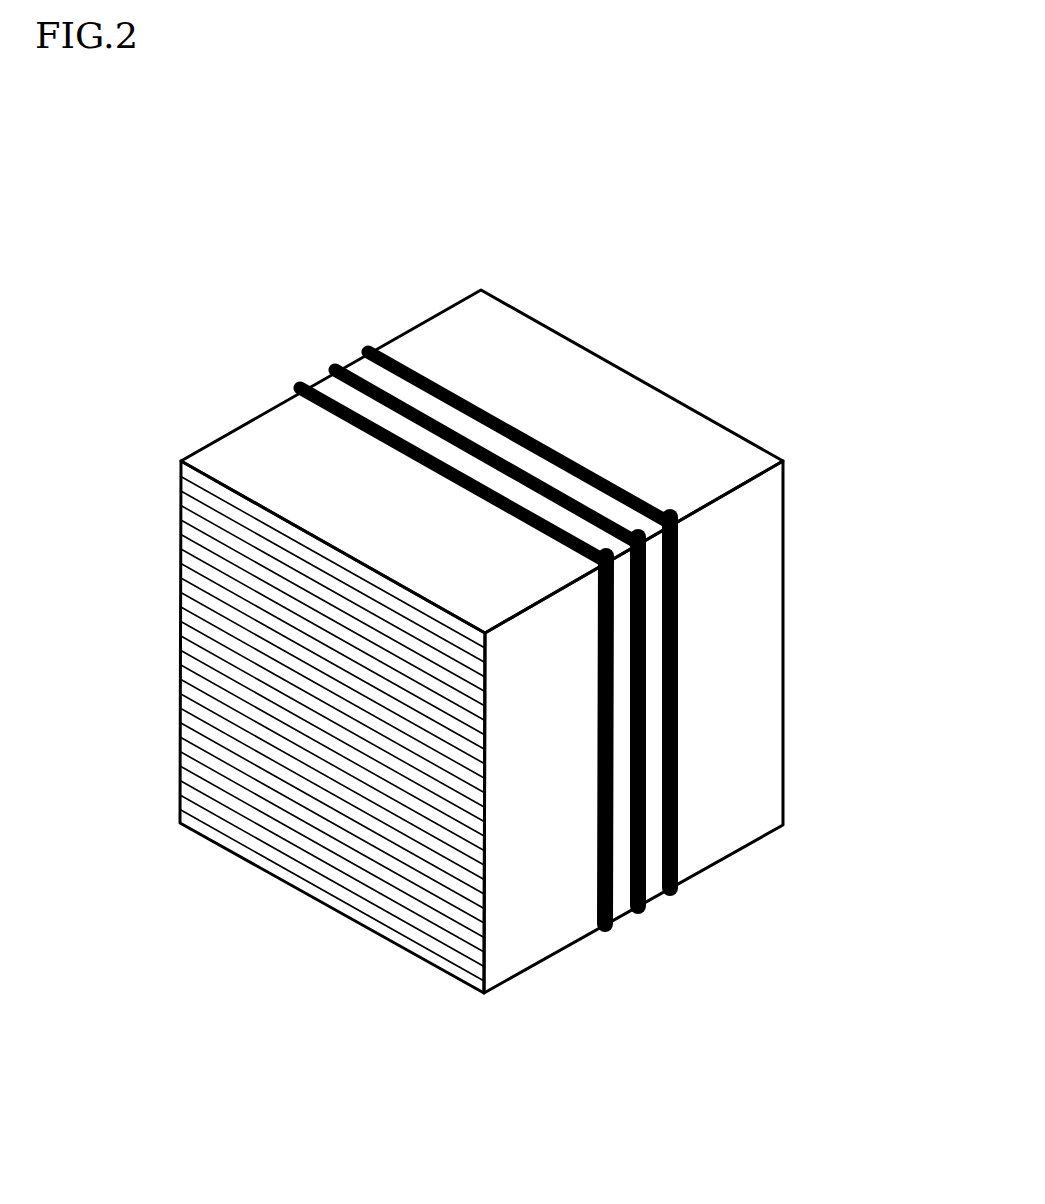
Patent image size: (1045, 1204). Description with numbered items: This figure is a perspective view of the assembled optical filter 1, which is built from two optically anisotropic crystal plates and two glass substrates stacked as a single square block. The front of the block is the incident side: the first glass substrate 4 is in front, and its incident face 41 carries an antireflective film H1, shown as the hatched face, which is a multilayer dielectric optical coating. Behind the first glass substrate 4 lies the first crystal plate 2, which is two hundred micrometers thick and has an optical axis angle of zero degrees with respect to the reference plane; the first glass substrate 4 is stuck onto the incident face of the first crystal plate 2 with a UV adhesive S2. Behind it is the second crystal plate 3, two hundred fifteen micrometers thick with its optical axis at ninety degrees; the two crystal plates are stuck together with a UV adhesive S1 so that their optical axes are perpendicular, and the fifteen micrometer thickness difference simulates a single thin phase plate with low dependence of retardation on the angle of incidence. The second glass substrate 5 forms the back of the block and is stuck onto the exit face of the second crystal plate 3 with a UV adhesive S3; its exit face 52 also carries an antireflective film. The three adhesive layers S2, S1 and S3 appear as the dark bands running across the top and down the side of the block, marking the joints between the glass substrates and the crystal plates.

The optical filter 1 is at (499, 644).
The first crystal plate 2 is at (500, 630).
The second crystal plate 3 is at (582, 592).
The first glass substrate 4 is at (342, 759).
The incident face 41 is at (197, 663).
The second glass substrate 5 is at (752, 678).
The exit face 52 is at (685, 402).
The antireflective film H1 is at (278, 820).
The UV adhesive S1 is at (353, 372).
The UV adhesive S2 is at (297, 387).
The UV adhesive S3 is at (422, 363).